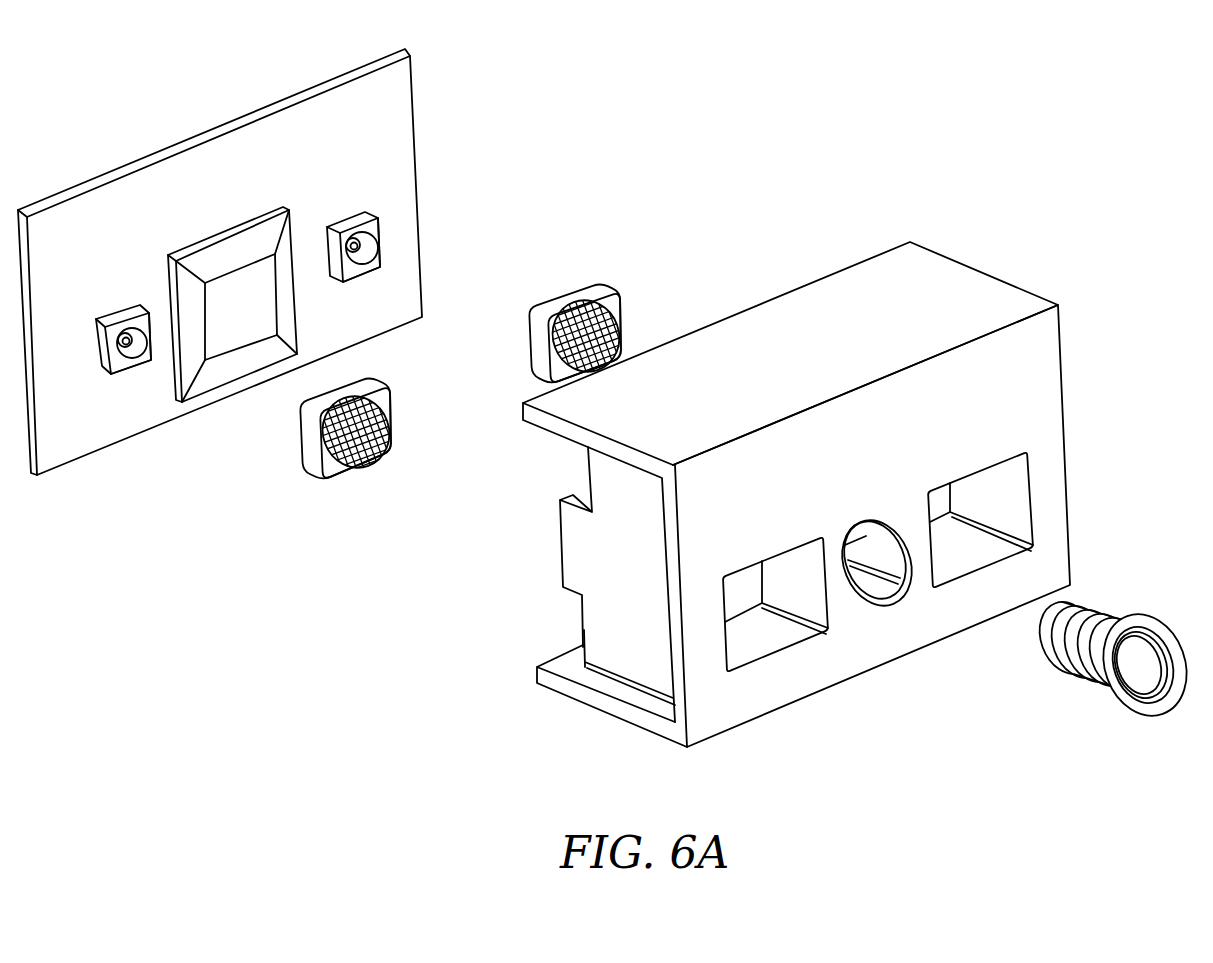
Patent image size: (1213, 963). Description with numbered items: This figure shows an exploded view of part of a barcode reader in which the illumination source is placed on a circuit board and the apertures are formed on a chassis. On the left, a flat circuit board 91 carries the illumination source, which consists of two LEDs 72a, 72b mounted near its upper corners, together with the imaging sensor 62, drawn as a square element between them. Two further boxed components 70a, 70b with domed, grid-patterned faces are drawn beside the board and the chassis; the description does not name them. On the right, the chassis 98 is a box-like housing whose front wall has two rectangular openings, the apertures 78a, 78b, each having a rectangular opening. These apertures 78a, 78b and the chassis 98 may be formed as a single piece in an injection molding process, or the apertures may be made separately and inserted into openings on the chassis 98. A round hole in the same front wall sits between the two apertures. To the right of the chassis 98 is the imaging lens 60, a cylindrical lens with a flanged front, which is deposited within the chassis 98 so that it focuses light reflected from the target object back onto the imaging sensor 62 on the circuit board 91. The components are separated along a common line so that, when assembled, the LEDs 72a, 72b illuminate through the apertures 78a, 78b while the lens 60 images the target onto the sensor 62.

The circuit board 91 is at (367, 64).
The imaging sensor 62 is at (227, 225).
The LED 72a is at (117, 312).
The LED 72b is at (345, 214).
The first light source module 70a is at (300, 437).
The second light source module 70b is at (530, 340).
The chassis 98 is at (985, 272).
The aperture 78a is at (788, 653).
The aperture 78b is at (972, 573).
The imaging lens 60 is at (1133, 720).